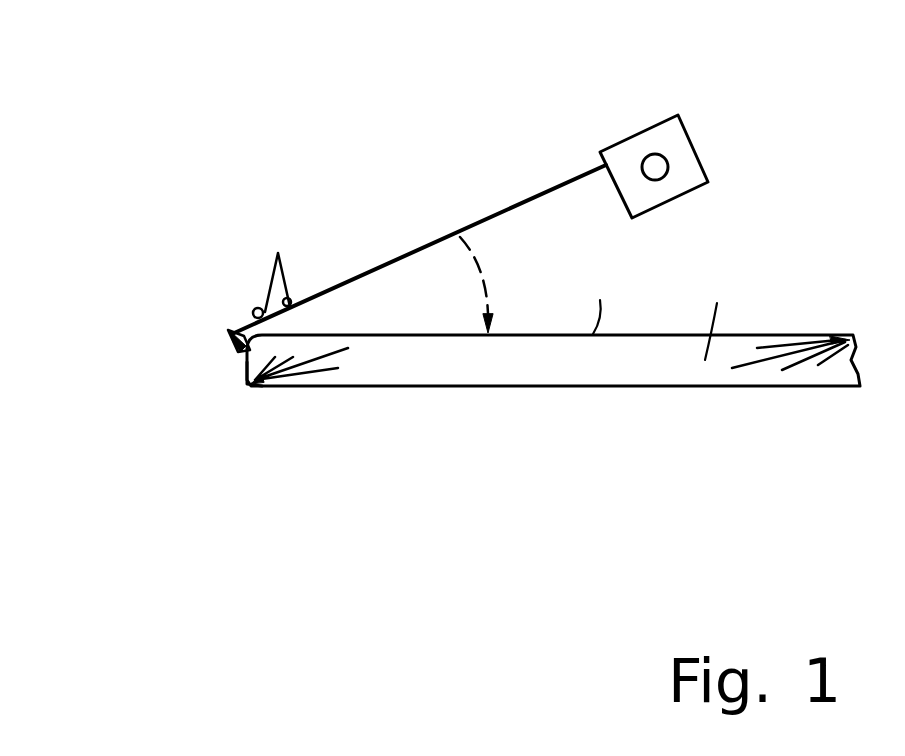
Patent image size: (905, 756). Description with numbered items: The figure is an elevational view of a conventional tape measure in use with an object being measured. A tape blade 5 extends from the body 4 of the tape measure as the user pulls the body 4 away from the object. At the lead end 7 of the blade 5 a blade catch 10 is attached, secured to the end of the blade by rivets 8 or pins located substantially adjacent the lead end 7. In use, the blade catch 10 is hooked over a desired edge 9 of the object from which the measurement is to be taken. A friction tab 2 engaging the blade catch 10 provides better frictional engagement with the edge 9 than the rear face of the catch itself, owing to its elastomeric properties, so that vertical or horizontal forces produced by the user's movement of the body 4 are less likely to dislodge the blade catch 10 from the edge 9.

The friction tab 2 is at (643, 98).
The body 4 is at (690, 172).
The tape blade 5 is at (412, 247).
The lead end 7 is at (240, 328).
The rivets 8 is at (278, 256).
The edge 9 is at (248, 366).
The blade catch 10 is at (233, 336).